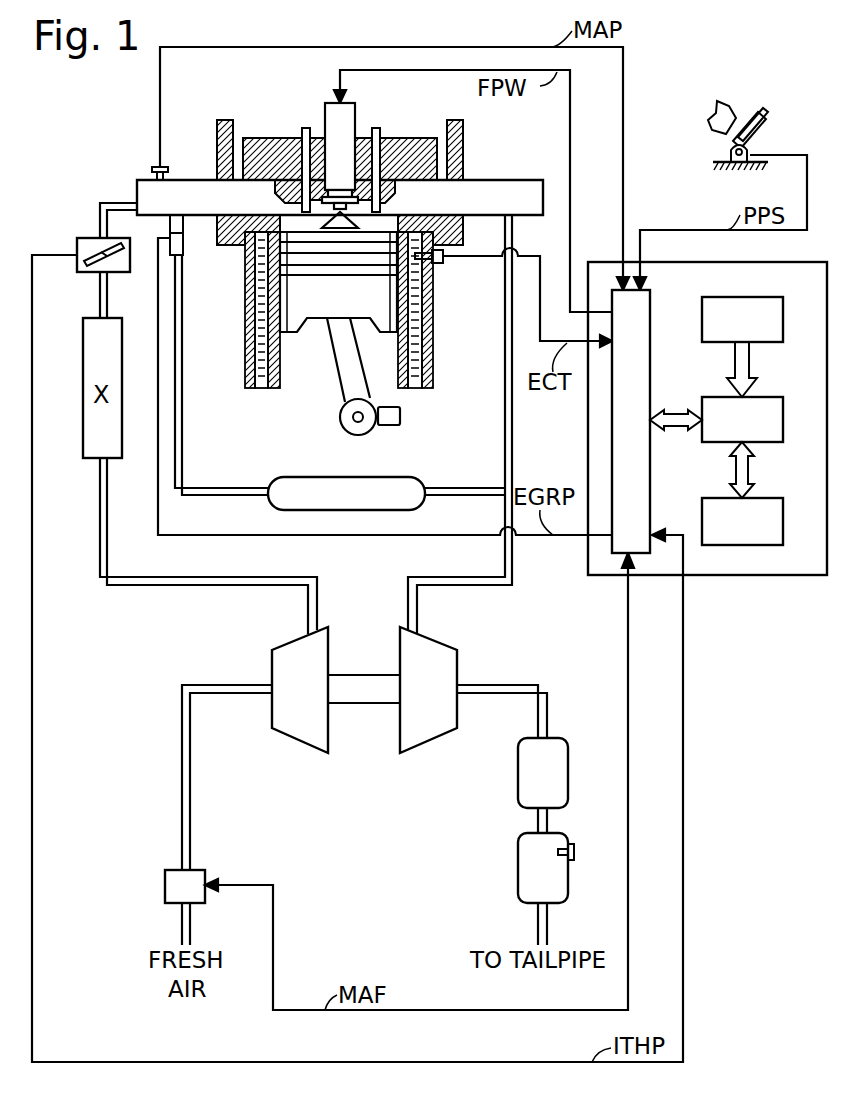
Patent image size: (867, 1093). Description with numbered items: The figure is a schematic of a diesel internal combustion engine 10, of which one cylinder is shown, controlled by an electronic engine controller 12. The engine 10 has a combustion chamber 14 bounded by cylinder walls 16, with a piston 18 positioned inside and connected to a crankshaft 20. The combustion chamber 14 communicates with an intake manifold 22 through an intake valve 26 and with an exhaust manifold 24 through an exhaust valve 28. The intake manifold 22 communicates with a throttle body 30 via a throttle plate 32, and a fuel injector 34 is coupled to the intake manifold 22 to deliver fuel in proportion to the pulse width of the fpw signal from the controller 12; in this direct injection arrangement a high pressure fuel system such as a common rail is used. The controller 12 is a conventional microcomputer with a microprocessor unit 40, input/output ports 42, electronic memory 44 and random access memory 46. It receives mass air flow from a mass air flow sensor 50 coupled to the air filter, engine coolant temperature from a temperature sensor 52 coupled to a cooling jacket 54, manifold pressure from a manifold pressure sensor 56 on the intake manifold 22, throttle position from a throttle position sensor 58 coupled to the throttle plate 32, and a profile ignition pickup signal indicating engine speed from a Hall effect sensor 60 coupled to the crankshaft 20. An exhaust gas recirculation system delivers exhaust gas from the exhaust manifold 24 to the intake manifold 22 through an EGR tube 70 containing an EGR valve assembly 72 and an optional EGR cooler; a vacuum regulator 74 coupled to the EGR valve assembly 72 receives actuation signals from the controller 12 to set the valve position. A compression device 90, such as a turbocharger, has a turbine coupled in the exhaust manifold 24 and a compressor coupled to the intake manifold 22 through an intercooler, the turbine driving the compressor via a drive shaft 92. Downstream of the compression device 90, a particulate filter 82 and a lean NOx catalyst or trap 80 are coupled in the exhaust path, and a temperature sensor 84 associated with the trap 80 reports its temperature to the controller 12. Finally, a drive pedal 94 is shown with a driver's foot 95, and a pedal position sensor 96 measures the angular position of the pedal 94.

The internal combustion engine 10 is at (246, 428).
The electronic engine controller 12 is at (786, 262).
The combustion chamber 14 is at (308, 242).
The cylinder walls 16 is at (285, 380).
The piston 18 is at (327, 305).
The crankshaft 20 is at (362, 432).
The intake manifold 22 is at (200, 209).
The exhaust manifold 24 is at (421, 407).
The intake valve 26 is at (300, 207).
The exhaust valve 28 is at (380, 207).
The throttle body 30 is at (92, 240).
The throttle plate 32 is at (85, 266).
The fuel injector 34 is at (325, 118).
The microprocessor unit 40 is at (783, 397).
The input/output ports 42 is at (650, 312).
The electronic memory 44 is at (730, 297).
The random access memory 46 is at (783, 498).
The mass air flow sensor 50 is at (208, 877).
The temperature sensor 52 is at (441, 260).
The cooling jacket 54 is at (420, 343).
The manifold pressure sensor 56 is at (153, 168).
The throttle position sensor 58 is at (88, 258).
The Hall effect sensor 60 is at (394, 426).
The EGR tube 70 is at (197, 488).
The EGR valve assembly 72 is at (180, 224).
The vacuum regulator 74 is at (170, 242).
The lean NOx catalyst or trap 80 is at (543, 868).
The particulate filter 82 is at (543, 773).
The temperature sensor 84 is at (576, 850).
The compression device 90 is at (213, 652).
The drive shaft 92 is at (357, 675).
The drive pedal 94 is at (762, 127).
The driver's foot 95 is at (712, 118).
The pedal position sensor 96 is at (718, 158).